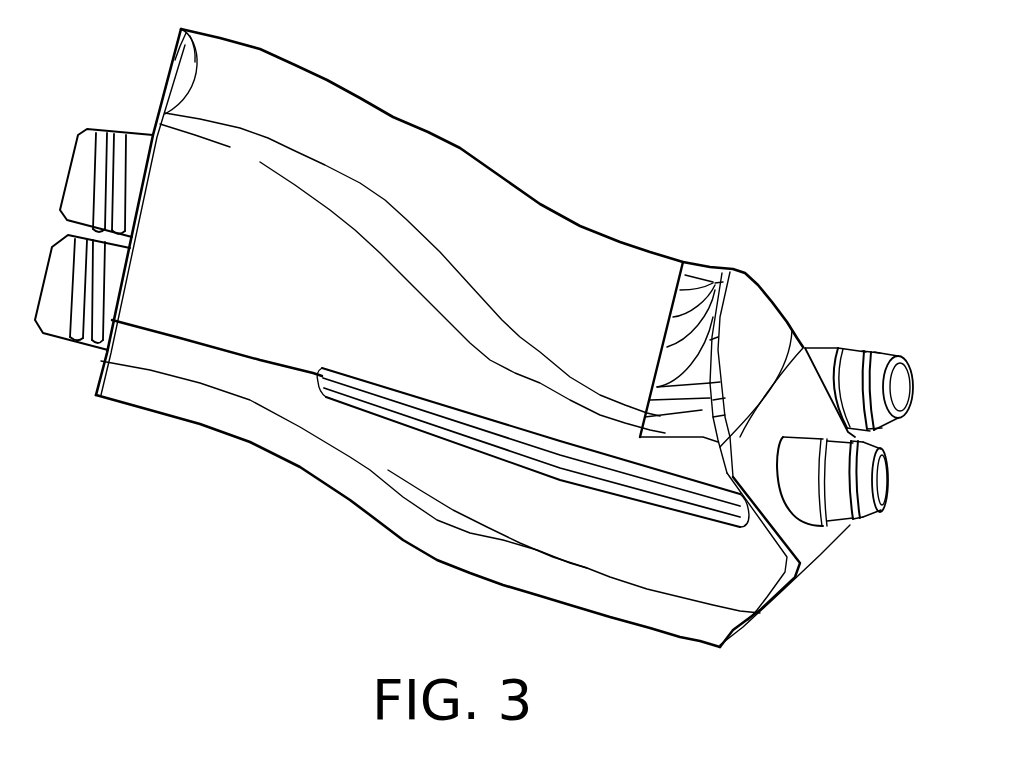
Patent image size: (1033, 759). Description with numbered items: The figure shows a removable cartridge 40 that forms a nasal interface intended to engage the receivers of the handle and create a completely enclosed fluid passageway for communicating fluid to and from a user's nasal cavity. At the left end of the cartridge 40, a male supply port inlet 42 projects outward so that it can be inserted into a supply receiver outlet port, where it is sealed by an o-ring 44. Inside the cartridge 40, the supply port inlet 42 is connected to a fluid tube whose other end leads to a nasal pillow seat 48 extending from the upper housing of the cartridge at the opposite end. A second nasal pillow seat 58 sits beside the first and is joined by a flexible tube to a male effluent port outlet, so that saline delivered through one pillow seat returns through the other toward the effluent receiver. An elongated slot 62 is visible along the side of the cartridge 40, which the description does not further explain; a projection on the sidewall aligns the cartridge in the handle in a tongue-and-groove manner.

The removable cartridge 40 is at (601, 185).
The male supply port inlet 42 is at (97, 133).
The o-ring 44 is at (123, 133).
The nasal pillow seat 48 is at (857, 352).
The nasal pillow seat 58 is at (882, 512).
The slot 62 is at (437, 430).